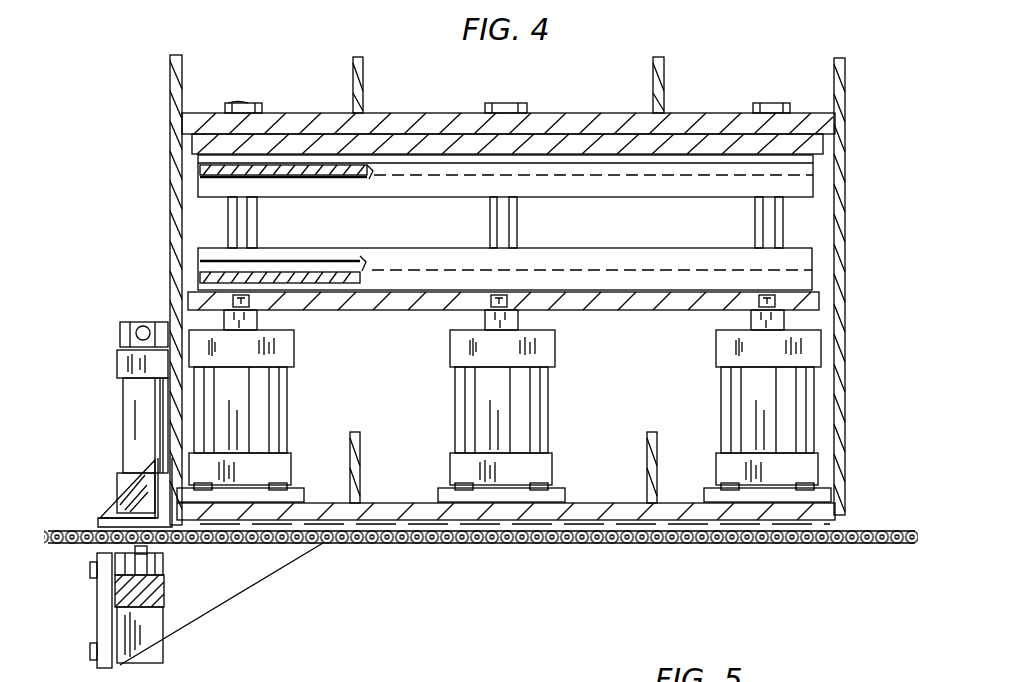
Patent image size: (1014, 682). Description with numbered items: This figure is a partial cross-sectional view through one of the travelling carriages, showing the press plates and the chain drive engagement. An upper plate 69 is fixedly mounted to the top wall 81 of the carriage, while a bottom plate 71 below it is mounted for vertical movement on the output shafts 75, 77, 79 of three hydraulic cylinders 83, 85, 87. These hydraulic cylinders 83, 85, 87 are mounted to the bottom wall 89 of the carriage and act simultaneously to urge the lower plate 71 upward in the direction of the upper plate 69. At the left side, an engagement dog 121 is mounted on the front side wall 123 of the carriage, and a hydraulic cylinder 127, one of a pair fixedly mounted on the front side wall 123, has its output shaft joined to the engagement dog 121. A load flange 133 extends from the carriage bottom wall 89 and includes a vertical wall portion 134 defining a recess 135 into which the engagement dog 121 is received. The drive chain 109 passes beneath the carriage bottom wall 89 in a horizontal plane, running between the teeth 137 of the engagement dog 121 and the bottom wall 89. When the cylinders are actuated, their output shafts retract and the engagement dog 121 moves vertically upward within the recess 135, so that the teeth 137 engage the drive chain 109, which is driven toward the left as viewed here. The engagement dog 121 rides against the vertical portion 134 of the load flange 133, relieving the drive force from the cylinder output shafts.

The upper plate 69 is at (672, 183).
The bottom plate 71 is at (692, 262).
The output shaft 75 is at (240, 298).
The output shaft 77 is at (494, 298).
The output shaft 79 is at (487, 263).
The top wall 81 is at (841, 112).
The hydraulic cylinder 83 is at (268, 407).
The hydraulic cylinder 85 is at (532, 390).
The hydraulic cylinder 87 is at (790, 395).
The bottom wall 89 is at (733, 512).
The drive chain 109 is at (385, 548).
The engagement dog 121 is at (117, 597).
The front side wall 123 is at (167, 392).
The hydraulic cylinder 127 is at (133, 388).
The load flange 133 is at (237, 586).
The vertical wall portion 134 is at (107, 630).
The recess 135 is at (158, 610).
The teeth 137 is at (117, 565).